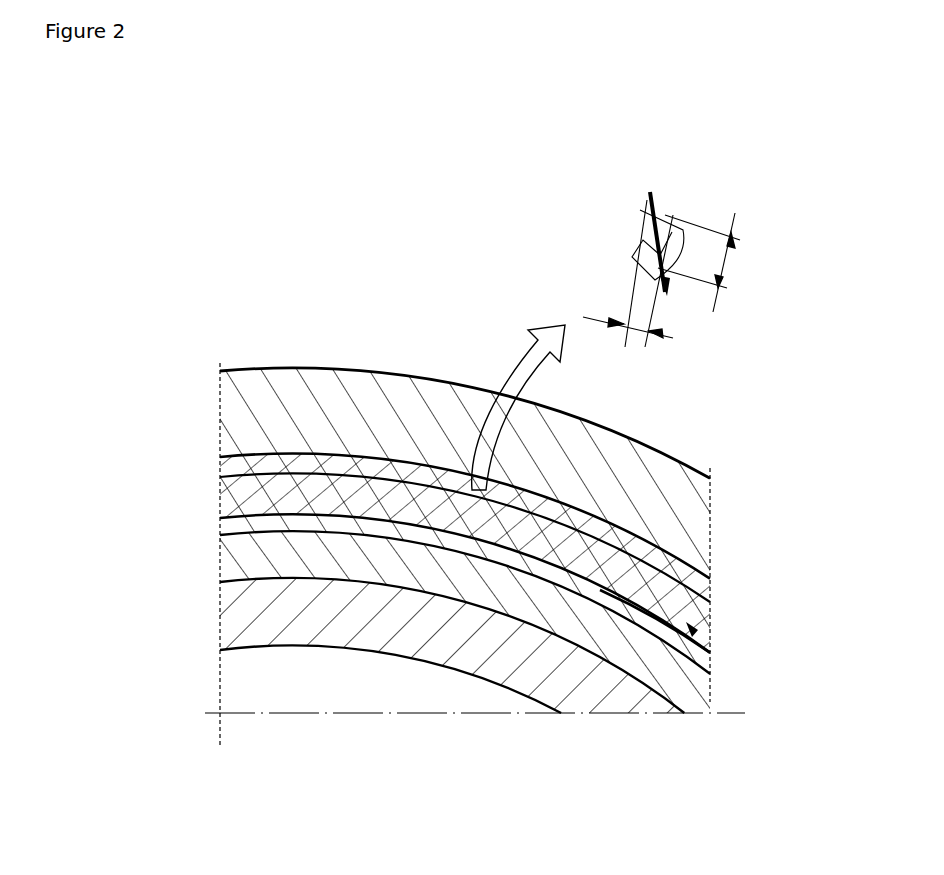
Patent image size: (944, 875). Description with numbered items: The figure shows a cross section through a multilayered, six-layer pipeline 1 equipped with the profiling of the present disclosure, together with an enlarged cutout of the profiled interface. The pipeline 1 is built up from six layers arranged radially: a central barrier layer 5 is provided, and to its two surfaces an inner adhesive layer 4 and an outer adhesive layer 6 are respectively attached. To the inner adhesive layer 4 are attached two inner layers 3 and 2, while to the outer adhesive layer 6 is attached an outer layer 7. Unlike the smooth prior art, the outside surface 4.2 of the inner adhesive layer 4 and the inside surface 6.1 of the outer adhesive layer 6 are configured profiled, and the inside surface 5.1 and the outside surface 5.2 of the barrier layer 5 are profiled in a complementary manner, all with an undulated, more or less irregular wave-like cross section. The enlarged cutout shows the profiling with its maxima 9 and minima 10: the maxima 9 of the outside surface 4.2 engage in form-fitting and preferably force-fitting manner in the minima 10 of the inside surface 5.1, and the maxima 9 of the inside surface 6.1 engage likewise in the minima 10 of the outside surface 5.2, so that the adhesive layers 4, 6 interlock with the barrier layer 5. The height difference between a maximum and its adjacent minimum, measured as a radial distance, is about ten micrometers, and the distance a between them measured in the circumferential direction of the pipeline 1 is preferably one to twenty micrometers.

The pipeline 1 is at (437, 318).
The inner layer 2 is at (587, 714).
The inner layer 3 is at (700, 705).
The inner adhesive layer 4 is at (222, 533).
The outside surface of the inner adhesive layer 4.2 is at (698, 627).
The central barrier layer 5 is at (222, 502).
The inside surface of the barrier layer 5.1 is at (280, 528).
The outside surface of the barrier layer 5.2 is at (320, 450).
The outer adhesive layer 6 is at (222, 462).
The inside surface of the outer adhesive layer 6.1 is at (350, 492).
The outer layer 7 is at (712, 515).
The maxima 9 is at (650, 190).
The minima 10 is at (666, 283).
The distance a is at (628, 292).